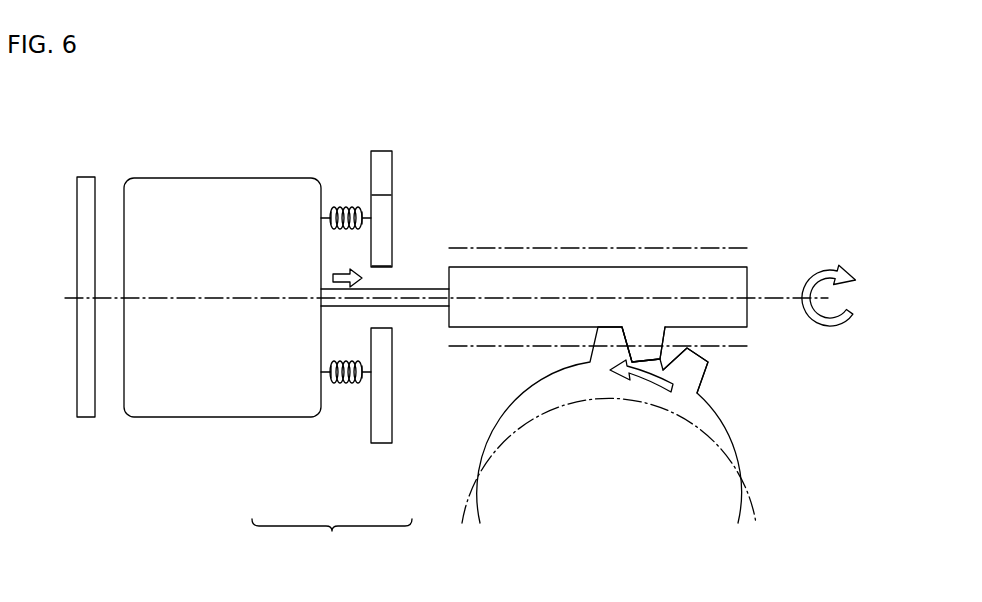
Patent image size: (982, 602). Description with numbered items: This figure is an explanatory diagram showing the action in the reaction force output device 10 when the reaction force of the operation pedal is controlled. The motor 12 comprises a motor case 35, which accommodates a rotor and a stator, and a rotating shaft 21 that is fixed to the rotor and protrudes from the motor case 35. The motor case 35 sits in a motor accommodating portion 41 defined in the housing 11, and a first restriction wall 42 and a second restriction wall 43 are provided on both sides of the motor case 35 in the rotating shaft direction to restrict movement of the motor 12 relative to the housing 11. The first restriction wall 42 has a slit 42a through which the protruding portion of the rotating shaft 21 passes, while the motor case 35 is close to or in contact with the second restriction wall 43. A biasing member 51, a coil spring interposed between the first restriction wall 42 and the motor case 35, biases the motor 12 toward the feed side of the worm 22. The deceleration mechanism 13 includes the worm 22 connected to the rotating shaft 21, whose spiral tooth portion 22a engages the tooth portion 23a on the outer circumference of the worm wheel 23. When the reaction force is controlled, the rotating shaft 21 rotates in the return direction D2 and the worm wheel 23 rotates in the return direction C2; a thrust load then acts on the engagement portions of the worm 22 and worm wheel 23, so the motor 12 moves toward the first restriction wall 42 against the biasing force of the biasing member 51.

The reaction force output device 10 is at (677, 192).
The housing 11 is at (390, 263).
The motor 12 is at (286, 368).
The deceleration mechanism 13 is at (711, 381).
The rotating shaft 21 is at (425, 307).
The worm 22 is at (747, 280).
The tooth portion 22a is at (658, 336).
The worm wheel 23 is at (723, 492).
The tooth portion 23a is at (707, 368).
The motor case 35 is at (236, 406).
The motor accommodating portion 41 is at (371, 178).
The first restriction wall 42 is at (383, 195).
The slit 42a is at (382, 272).
The second restriction wall 43 is at (90, 177).
The biasing member 51 is at (333, 208).
The return direction C2 is at (648, 380).
The return direction D2 is at (833, 263).